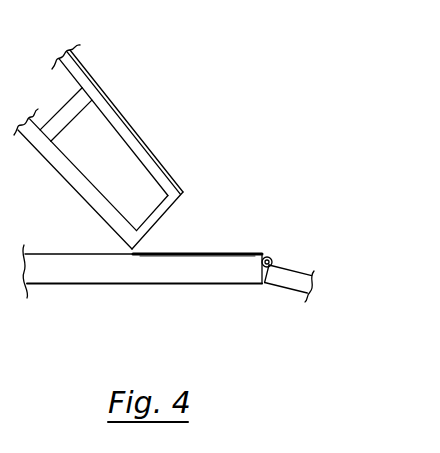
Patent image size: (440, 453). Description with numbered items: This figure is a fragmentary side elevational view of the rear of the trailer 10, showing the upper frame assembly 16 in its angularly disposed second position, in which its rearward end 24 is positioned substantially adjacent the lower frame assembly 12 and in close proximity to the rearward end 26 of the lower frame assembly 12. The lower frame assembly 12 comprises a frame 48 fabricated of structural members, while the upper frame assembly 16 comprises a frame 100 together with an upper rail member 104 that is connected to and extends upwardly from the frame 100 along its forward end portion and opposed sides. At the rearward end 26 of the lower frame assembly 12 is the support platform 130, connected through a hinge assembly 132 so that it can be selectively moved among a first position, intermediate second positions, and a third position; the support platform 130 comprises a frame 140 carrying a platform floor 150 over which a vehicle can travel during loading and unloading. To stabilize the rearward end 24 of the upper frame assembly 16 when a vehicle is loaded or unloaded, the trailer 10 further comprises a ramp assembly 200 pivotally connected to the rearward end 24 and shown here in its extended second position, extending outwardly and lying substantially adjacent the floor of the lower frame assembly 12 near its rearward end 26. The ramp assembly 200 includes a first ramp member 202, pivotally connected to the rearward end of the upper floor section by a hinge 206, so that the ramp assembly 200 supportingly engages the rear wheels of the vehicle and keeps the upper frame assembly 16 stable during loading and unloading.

The trailer 10 is at (219, 60).
The lower frame assembly 12 is at (81, 298).
The upper frame assembly 16 is at (170, 143).
The rearward end of the upper frame assembly 24 is at (83, 199).
The rearward end of the lower frame assembly 26 is at (211, 278).
The frame 48 is at (150, 278).
The frame 100 is at (56, 161).
The upper rail member 104 is at (131, 114).
The support platform 130 is at (291, 240).
The hinge assembly 132 is at (267, 256).
The frame 140 is at (281, 298).
The platform floor 150 is at (299, 267).
The ramp assembly 200 is at (200, 242).
The first ramp member 202 is at (208, 256).
The hinge 206 is at (137, 248).